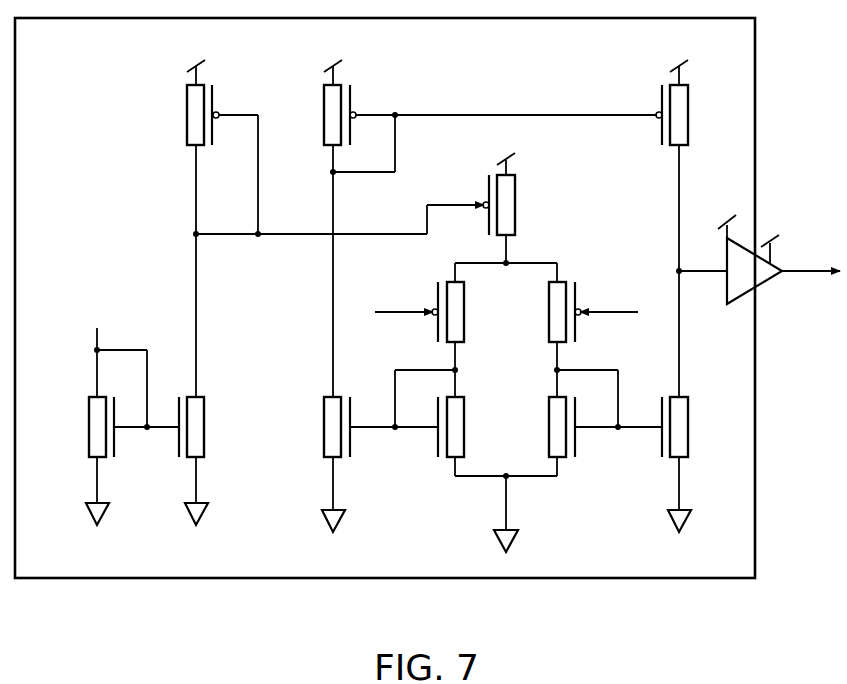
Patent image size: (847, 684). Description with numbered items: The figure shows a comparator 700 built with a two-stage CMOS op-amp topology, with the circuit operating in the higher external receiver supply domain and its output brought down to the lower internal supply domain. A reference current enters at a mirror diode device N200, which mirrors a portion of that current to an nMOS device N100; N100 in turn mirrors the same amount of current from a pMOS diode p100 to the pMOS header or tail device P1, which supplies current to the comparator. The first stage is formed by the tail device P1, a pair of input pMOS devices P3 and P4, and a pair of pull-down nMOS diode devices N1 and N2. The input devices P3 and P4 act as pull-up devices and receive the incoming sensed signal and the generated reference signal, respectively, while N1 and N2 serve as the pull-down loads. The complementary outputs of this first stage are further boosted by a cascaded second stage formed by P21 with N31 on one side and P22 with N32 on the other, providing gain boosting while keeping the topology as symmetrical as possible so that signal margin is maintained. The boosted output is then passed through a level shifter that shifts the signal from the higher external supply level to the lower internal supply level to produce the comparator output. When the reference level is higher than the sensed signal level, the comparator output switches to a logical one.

The comparator 700 is at (744, 567).
The pMOS diode p100 is at (204, 102).
The second-stage pMOS device P21 is at (323, 102).
The second-stage pMOS device P22 is at (691, 102).
The tail device P1 is at (512, 194).
The input pMOS device P3 is at (460, 312).
The input pMOS device P4 is at (551, 312).
The mirror diode device N200 is at (78, 427).
The nMOS device N100 is at (221, 427).
The second-stage nMOS device N31 is at (320, 427).
The pull-down nMOS diode device N1 is at (465, 427).
The pull-down nMOS diode device N2 is at (548, 427).
The second-stage nMOS device N32 is at (695, 427).